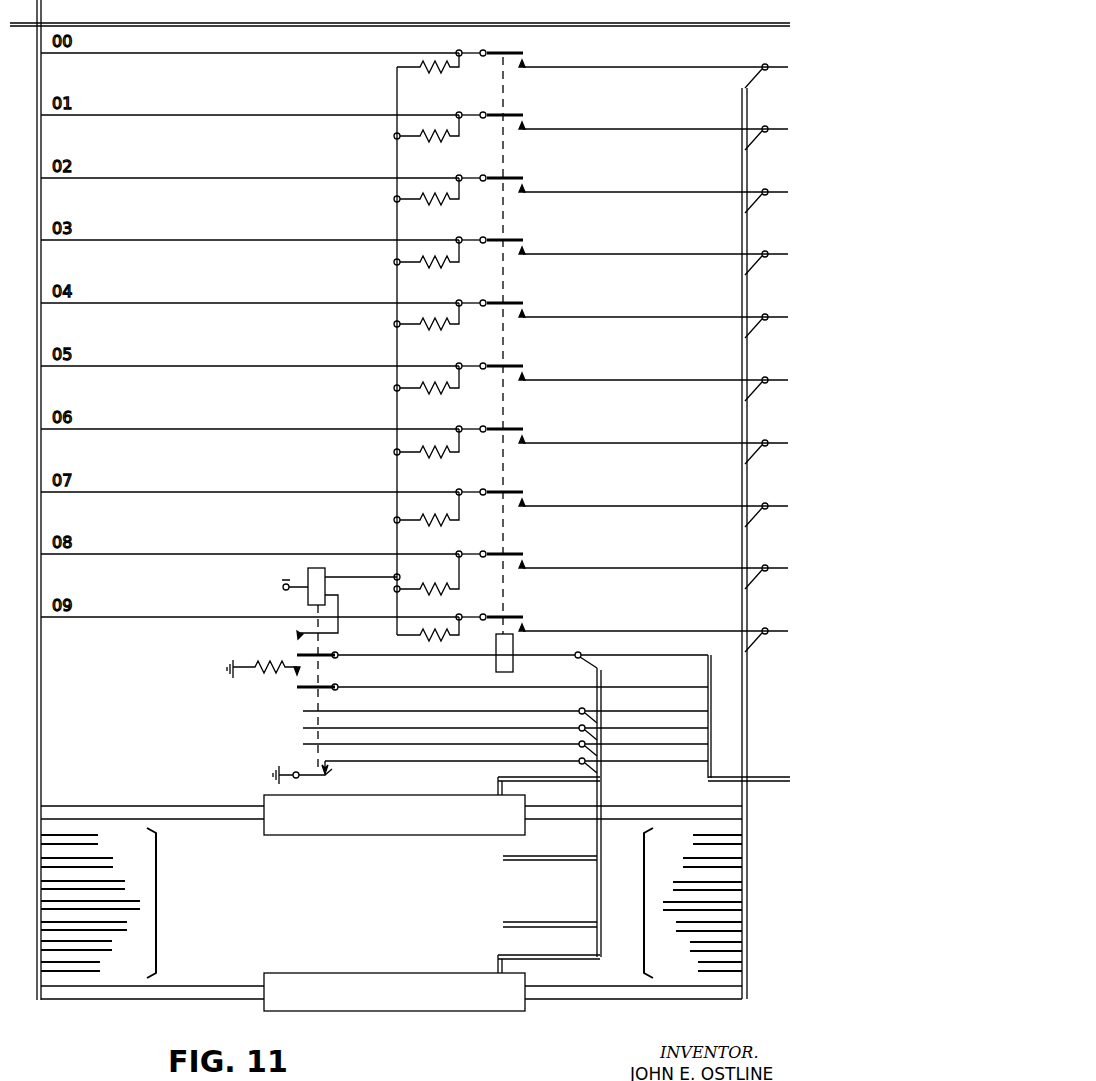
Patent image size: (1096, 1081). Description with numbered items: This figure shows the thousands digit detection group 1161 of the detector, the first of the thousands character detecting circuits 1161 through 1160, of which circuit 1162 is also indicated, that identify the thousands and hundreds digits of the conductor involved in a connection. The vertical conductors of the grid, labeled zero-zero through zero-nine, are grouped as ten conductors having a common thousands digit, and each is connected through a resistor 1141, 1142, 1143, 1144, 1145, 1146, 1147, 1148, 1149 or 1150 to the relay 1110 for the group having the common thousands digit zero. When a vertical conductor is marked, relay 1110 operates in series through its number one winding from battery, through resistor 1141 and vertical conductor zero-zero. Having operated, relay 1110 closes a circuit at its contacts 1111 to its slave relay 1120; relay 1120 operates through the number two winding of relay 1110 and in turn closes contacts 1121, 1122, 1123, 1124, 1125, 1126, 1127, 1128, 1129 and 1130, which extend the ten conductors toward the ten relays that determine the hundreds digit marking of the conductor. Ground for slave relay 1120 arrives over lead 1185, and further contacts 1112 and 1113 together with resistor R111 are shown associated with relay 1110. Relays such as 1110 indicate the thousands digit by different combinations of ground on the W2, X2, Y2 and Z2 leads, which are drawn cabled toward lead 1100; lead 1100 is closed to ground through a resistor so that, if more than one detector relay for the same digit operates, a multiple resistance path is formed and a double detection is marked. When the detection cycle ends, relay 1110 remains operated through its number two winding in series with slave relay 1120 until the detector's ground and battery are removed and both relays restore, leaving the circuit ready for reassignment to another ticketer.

The thousands digit detection group 1161 is at (250, 41).
The contacts of slave relay 1120 1121 is at (527, 58).
The contacts of slave relay 1120 1122 is at (527, 120).
The contacts of slave relay 1120 1123 is at (527, 183).
The contacts of slave relay 1120 1124 is at (527, 245).
The contacts of slave relay 1120 1125 is at (527, 308).
The contacts of slave relay 1120 1126 is at (527, 371).
The contacts of slave relay 1120 1127 is at (527, 434).
The contacts of slave relay 1120 1128 is at (527, 497).
The contacts of slave relay 1120 1129 is at (527, 559).
The contacts of slave relay 1120 1130 is at (527, 622).
The resistor 1141 is at (430, 73).
The resistor 1142 is at (430, 142).
The resistor 1143 is at (430, 205).
The resistor 1144 is at (430, 268).
The resistor 1145 is at (430, 330).
The resistor 1146 is at (430, 394).
The resistor 1147 is at (430, 458).
The resistor 1148 is at (430, 526).
The resistor 1149 is at (430, 595).
The resistor 1150 is at (432, 642).
The thousands relay 1110 is at (308, 599).
The contacts of relay 1110 1111 is at (297, 658).
The switch contact 1112 is at (292, 682).
The switch contact 1113 is at (331, 772).
The slave relay 1120 is at (520, 662).
The conductor 1185 is at (684, 655).
The lead 1100 is at (684, 683).
The register 1162 is at (391, 815).
The thousands character detecting circuit 1160 is at (391, 992).
The resistor R111 is at (250, 665).
The W2 lead W2 is at (680, 707).
The X2 lead X2 is at (680, 725).
The Y2 lead Y2 is at (680, 742).
The Z2 lead Z2 is at (680, 758).